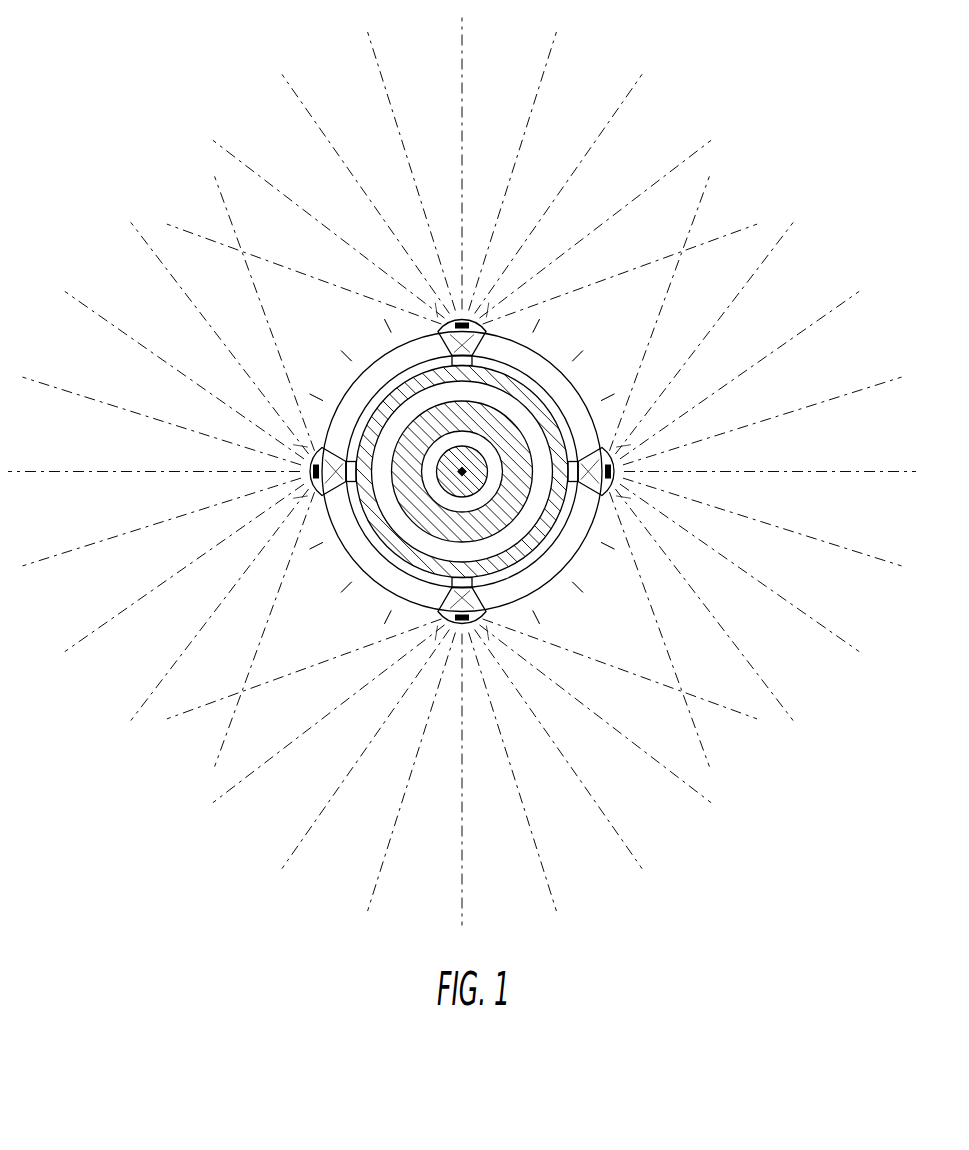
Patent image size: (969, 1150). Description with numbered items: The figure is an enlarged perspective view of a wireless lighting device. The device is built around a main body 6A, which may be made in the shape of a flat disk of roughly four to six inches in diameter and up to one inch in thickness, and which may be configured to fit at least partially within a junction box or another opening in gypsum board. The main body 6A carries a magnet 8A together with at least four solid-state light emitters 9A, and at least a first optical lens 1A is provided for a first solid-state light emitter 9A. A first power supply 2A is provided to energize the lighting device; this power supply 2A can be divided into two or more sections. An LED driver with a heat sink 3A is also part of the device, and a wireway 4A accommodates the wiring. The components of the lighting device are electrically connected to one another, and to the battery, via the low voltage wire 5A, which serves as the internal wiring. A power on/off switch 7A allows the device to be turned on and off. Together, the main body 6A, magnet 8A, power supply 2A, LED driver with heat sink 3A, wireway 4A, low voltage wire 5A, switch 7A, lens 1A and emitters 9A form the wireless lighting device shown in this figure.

The first optical lens 1A is at (486, 330).
The first power supply 2A is at (505, 435).
The LED driver with a heat sink 3A is at (574, 487).
The wireway 4A is at (543, 542).
The low voltage wire 5A is at (487, 600).
The main body 6A is at (395, 598).
The power on/off switch 7A is at (460, 478).
The magnet 8A is at (447, 460).
The solid-state light emitter 9A is at (448, 356).